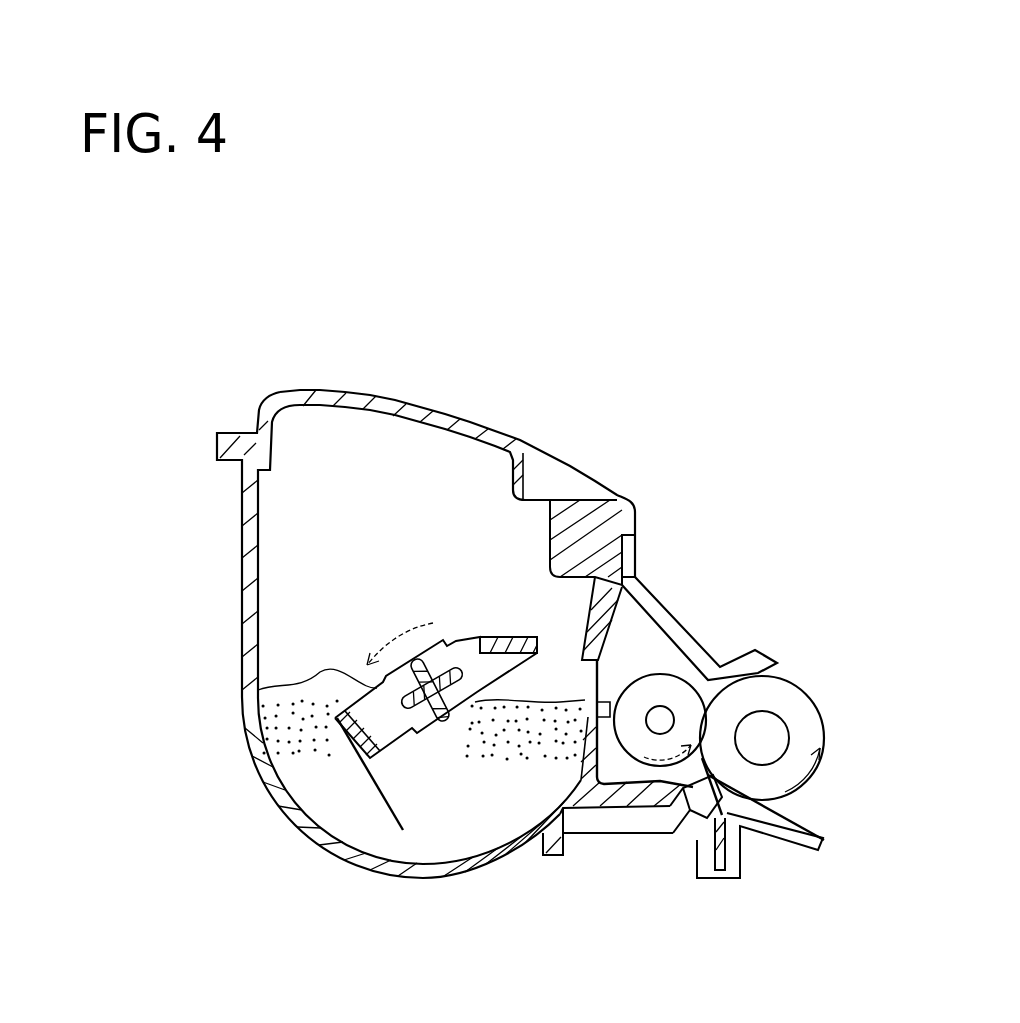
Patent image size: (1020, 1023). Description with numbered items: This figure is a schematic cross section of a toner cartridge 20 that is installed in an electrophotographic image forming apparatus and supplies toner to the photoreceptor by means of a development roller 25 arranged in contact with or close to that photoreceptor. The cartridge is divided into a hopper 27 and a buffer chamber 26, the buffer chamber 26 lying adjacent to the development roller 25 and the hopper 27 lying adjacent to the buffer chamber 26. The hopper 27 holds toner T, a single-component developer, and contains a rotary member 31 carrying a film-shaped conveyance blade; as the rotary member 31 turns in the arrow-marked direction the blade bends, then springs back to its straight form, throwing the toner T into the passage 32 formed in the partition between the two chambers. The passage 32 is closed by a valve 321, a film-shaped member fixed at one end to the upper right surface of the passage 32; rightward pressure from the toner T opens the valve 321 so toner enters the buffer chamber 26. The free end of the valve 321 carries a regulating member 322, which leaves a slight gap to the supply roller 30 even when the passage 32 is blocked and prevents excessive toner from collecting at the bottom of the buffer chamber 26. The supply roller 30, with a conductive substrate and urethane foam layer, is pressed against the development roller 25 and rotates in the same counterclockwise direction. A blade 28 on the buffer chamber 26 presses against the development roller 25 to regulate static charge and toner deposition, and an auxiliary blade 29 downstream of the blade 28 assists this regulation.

The toner cartridge 20 is at (307, 360).
The hopper 27 is at (427, 440).
The buffer chamber 26 is at (647, 587).
The valve 321 is at (585, 685).
The supply roller 30 is at (660, 720).
The development roller 25 is at (762, 738).
The passage 32 is at (590, 686).
The rotary member 31 is at (258, 690).
The toner T is at (363, 820).
The regulating member 322 is at (600, 740).
The blade 28 is at (705, 817).
The auxiliary blade 29 is at (745, 822).